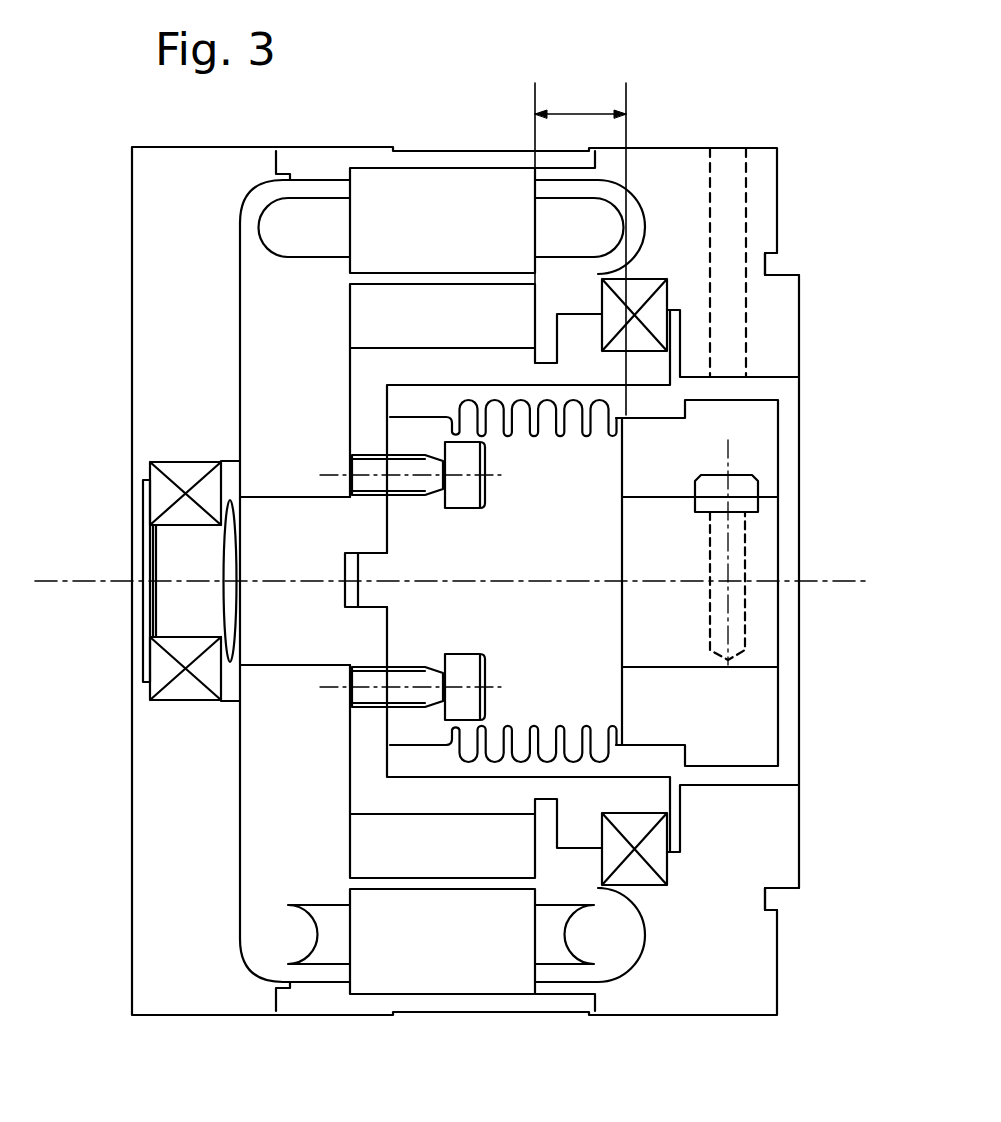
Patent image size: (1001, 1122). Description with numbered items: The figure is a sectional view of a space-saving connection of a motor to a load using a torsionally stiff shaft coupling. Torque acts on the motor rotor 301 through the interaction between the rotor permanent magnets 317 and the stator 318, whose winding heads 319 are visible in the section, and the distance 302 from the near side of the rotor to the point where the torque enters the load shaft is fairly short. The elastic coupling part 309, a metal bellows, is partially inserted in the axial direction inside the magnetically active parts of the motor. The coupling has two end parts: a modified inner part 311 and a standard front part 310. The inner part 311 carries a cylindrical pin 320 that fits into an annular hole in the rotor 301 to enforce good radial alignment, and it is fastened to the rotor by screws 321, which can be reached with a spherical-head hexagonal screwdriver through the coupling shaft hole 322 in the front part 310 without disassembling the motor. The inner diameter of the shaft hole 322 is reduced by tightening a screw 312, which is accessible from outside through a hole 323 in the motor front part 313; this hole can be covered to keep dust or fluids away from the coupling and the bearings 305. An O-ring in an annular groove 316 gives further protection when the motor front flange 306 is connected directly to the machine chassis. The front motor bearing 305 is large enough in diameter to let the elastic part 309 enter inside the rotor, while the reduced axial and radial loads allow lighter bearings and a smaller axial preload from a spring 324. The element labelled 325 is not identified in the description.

The motor rotor 301 is at (337, 657).
The distance 302 is at (580, 249).
The front motor bearing 305 is at (660, 863).
The motor front flange 306 is at (792, 273).
The elastic coupling part 309 is at (553, 712).
The front coupling end part 310 is at (770, 731).
The inner coupling end part 311 is at (430, 540).
The screw 312 is at (703, 487).
The motor front part 313 is at (685, 152).
The annular groove 316 is at (777, 900).
The rotor permanent magnets 317 is at (360, 838).
The stator 318 is at (440, 988).
The winding heads 319 is at (320, 915).
The cylindrical pin 320 is at (373, 598).
The screws 321 is at (405, 678).
The coupling shaft hole 322 is at (760, 667).
The hole 323 is at (703, 268).
The spring 324 is at (240, 549).
The end cap 325 is at (252, 327).